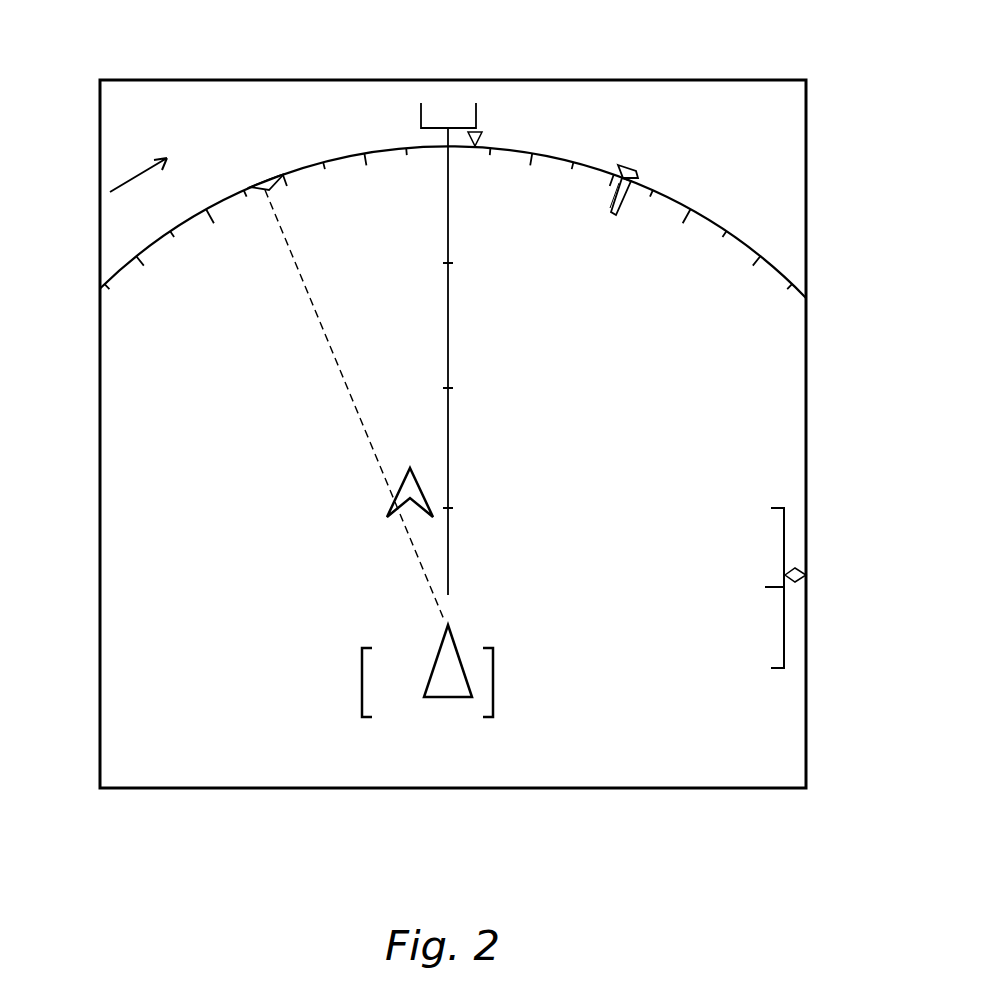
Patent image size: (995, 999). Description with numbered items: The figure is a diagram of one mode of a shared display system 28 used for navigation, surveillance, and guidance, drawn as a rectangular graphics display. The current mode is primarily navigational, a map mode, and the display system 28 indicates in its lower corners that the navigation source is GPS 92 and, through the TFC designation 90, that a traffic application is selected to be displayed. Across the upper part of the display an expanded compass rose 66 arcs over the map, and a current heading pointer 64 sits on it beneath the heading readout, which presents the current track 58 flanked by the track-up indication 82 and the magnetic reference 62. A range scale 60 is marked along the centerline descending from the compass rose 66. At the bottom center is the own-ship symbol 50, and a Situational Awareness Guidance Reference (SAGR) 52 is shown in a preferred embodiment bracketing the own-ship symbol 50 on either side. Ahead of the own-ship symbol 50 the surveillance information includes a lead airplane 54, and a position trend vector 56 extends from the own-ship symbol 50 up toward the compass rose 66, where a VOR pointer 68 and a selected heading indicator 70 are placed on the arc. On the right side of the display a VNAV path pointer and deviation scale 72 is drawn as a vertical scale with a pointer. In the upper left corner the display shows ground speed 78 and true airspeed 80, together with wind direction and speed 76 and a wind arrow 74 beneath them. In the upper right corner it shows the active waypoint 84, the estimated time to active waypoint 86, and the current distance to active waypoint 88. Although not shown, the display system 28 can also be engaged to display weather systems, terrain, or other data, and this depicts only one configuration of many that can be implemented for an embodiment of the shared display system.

The display system 28 is at (807, 232).
The own-ship symbol 50 is at (447, 700).
The Situational Awareness Guidance Reference (SAGR) 52 is at (362, 683).
The lead airplane 54 is at (403, 474).
The position trend vector 56 is at (440, 612).
The current track 58 is at (443, 100).
The range scale 60 is at (453, 388).
The magnetic reference 62 is at (512, 100).
The current heading pointer 64 is at (485, 143).
The expanded compass rose 66 is at (560, 157).
The VOR pointer 68 is at (638, 163).
The selected heading indicator 70 is at (257, 188).
The VNAV path pointer and deviation scale 72 is at (773, 507).
The wind arrow 74 is at (128, 180).
The wind direction and speed 76 is at (100, 128).
The ground speed 78 is at (150, 84).
The true airspeed 80 is at (262, 98).
The track-up indication 82 is at (397, 100).
The active waypoint 84 is at (710, 100).
The estimated time to active waypoint 86 is at (767, 126).
The current distance to active waypoint 88 is at (788, 167).
The TFC designation 90 is at (128, 748).
The GPS 92 is at (770, 745).